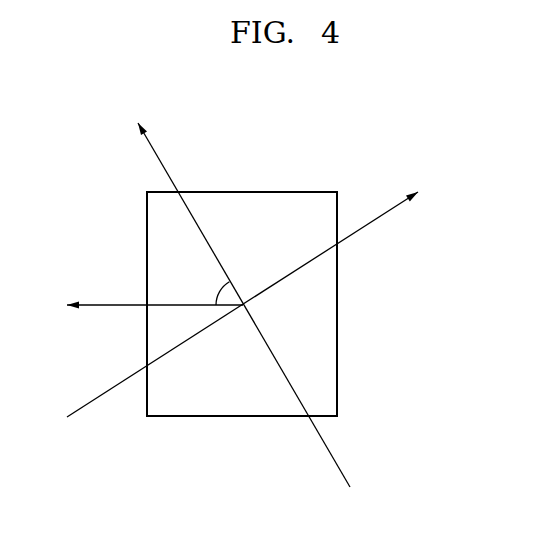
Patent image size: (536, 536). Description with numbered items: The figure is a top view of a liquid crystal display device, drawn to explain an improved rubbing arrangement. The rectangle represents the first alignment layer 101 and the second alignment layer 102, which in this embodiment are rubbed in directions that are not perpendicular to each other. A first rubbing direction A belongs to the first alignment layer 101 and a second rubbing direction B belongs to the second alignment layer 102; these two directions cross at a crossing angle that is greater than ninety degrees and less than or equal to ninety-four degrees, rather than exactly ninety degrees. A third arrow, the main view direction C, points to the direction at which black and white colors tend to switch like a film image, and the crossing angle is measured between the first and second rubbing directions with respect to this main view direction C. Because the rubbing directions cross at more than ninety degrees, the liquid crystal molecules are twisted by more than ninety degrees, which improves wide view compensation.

The first alignment layer 101 is at (306, 304).
The second alignment layer 102 is at (322, 352).
The first rubbing direction A is at (236, 293).
The second rubbing direction B is at (254, 295).
The main view direction C is at (142, 304).